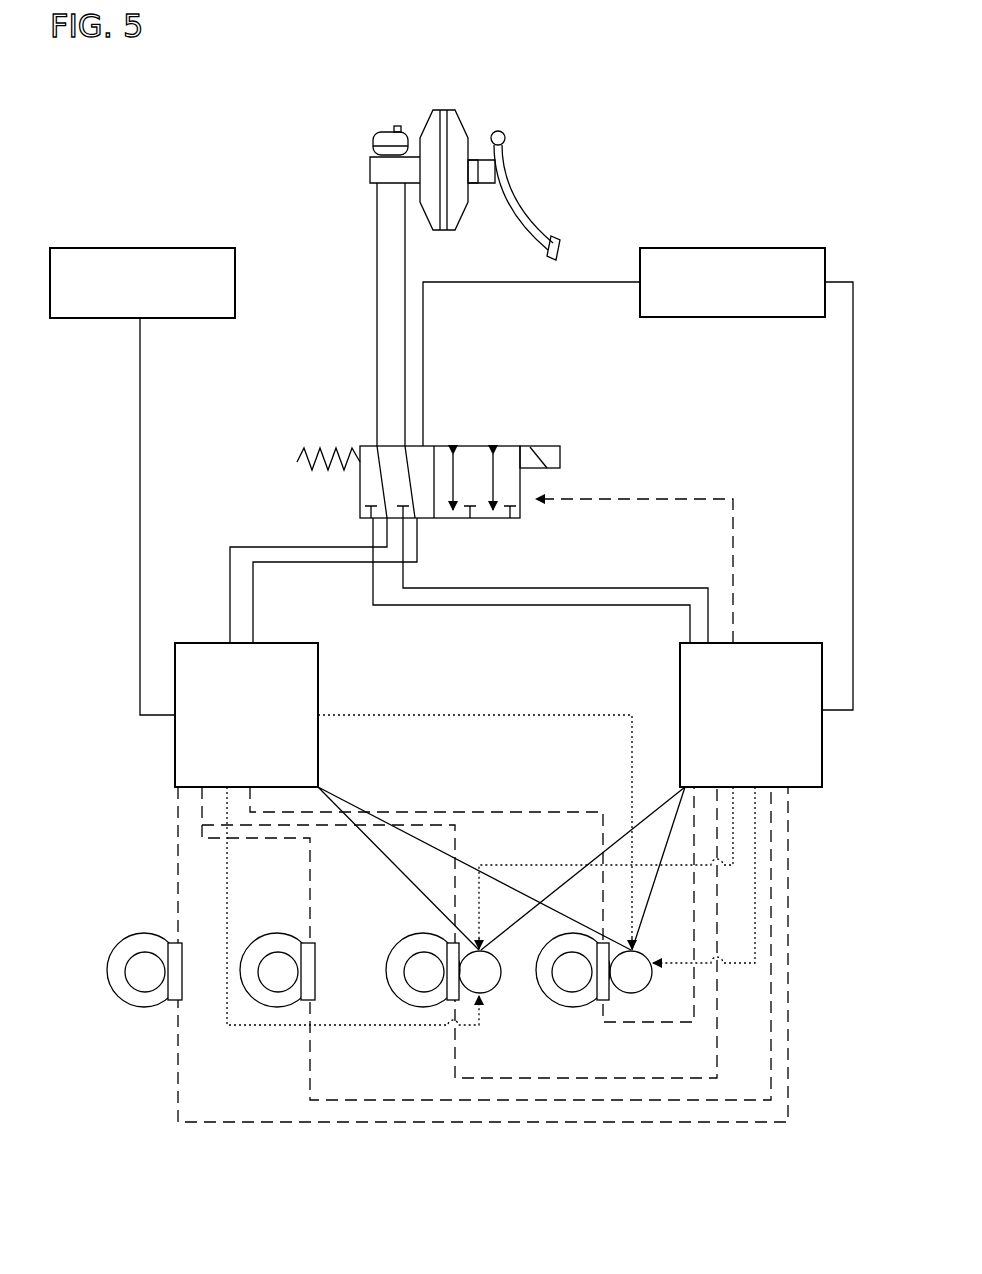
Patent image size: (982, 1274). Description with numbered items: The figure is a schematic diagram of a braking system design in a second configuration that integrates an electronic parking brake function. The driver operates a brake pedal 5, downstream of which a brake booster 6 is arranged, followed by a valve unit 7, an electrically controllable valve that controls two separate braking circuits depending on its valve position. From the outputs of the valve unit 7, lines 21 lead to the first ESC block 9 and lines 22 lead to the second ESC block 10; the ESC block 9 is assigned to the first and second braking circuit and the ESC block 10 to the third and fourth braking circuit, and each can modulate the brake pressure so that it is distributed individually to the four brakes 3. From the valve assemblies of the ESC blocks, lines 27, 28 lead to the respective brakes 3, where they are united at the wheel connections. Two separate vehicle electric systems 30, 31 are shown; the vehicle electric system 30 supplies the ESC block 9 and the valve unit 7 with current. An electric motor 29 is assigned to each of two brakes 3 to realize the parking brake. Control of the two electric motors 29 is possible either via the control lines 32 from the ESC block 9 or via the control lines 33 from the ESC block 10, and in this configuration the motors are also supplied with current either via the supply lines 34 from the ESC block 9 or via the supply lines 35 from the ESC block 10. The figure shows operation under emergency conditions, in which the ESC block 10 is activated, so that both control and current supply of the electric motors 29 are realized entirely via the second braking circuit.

The brake 3 is at (138, 1008).
The brake pedal 5 is at (520, 200).
The brake booster 6 is at (428, 128).
The valve unit 7 is at (514, 423).
The ESC block 9 is at (822, 753).
The ESC block 10 is at (175, 745).
The lines 21 is at (560, 605).
The lines 22 is at (267, 561).
The line 27 is at (790, 880).
The line 28 is at (215, 838).
The electric motor 29 is at (495, 993).
The vehicle electric system 30 is at (708, 247).
The vehicle electric system 31 is at (155, 247).
The control lines 32 is at (747, 963).
The control lines 33 is at (225, 912).
The supply lines 34 is at (678, 812).
The supply lines 35 is at (427, 843).